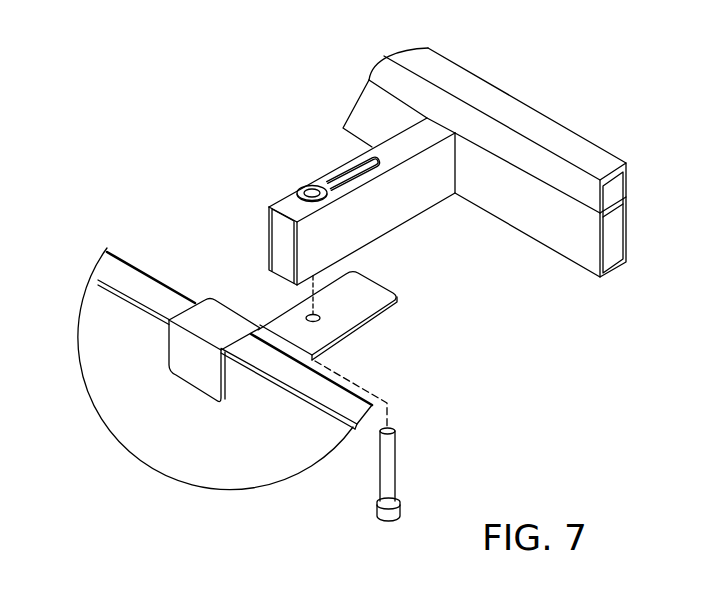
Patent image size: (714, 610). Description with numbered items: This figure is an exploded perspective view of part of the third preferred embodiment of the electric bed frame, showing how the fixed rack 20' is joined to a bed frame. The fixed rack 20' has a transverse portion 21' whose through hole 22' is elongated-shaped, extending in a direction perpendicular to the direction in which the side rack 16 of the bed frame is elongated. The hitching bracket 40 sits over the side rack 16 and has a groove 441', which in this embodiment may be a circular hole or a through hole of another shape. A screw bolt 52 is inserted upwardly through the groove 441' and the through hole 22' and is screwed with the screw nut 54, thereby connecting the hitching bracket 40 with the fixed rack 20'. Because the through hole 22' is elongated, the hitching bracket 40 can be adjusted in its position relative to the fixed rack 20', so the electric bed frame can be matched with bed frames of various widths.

The fixed rack 20' is at (484, 162).
The transverse portion 21' is at (368, 200).
The through hole 22' is at (336, 153).
The screw nut 54 is at (298, 183).
The hitching bracket 40 is at (215, 320).
The groove 441' is at (349, 350).
The side rack 16 is at (150, 410).
The screw bolt 52 is at (400, 464).